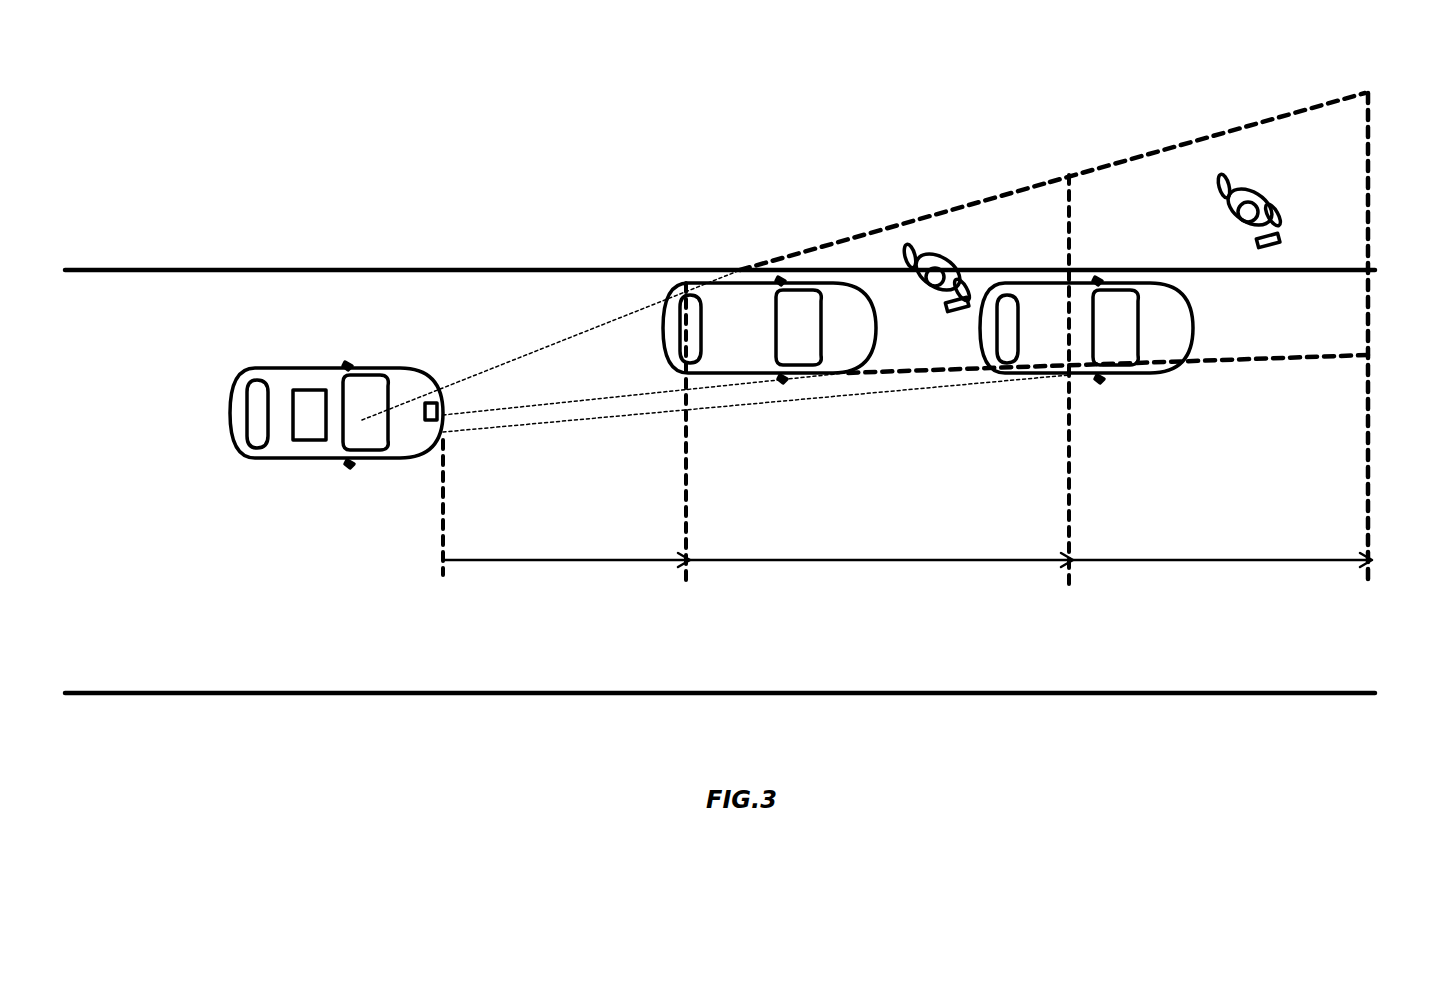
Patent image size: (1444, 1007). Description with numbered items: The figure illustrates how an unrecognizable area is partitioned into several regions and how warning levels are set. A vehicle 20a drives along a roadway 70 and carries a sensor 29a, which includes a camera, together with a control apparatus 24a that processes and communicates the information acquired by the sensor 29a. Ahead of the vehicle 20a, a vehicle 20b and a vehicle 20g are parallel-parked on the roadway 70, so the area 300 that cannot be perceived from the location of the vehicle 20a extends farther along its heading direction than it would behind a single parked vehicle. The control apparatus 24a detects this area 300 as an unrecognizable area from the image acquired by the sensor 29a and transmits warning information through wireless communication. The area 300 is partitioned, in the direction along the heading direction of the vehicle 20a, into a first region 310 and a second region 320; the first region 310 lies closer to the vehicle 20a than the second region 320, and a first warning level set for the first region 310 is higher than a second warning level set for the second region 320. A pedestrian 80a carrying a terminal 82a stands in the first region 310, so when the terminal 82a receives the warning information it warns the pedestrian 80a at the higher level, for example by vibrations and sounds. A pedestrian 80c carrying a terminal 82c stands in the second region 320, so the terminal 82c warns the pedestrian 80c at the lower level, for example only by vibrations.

The roadway 70 is at (266, 650).
The vehicle 20a is at (230, 425).
The control apparatus 24a is at (316, 440).
The sensor 29a is at (431, 400).
The vehicle 20b is at (665, 350).
The vehicle 20g is at (1150, 283).
The pedestrian 80a is at (950, 250).
The terminal 82a is at (972, 312).
The pedestrian 80c is at (1252, 190).
The terminal 82c is at (1278, 248).
The area 300 is at (939, 312).
The first region 310 is at (868, 232).
The second region 320 is at (1183, 142).